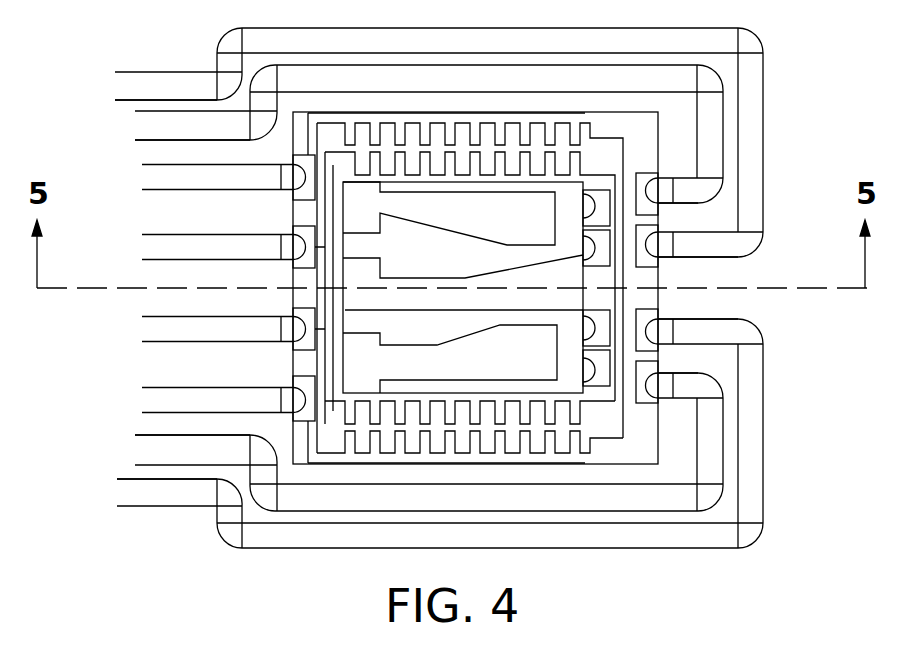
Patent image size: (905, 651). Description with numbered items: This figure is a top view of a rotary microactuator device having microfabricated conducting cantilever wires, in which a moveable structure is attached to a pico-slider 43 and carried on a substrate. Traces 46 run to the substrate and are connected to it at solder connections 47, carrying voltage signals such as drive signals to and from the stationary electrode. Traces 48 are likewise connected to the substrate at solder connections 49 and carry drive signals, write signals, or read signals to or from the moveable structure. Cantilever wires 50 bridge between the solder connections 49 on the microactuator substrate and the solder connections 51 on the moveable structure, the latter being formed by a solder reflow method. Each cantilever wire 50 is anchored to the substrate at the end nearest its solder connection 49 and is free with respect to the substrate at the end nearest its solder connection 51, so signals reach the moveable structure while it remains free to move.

The pico-slider 43 is at (407, 374).
The traces 46 is at (150, 87).
The solder connections 47 is at (658, 180).
The traces 48 is at (150, 177).
The solder connections 49 is at (292, 162).
The cantilever wires 50 is at (427, 117).
The solder connections 51 is at (600, 190).